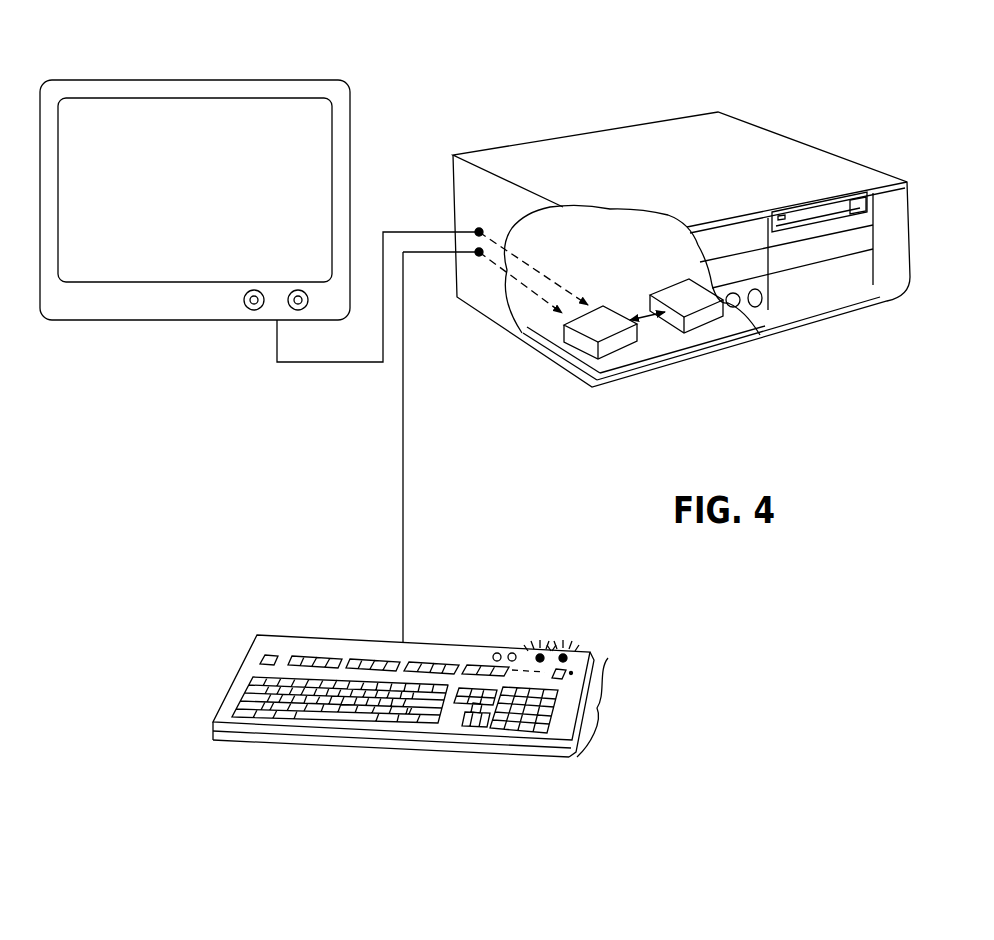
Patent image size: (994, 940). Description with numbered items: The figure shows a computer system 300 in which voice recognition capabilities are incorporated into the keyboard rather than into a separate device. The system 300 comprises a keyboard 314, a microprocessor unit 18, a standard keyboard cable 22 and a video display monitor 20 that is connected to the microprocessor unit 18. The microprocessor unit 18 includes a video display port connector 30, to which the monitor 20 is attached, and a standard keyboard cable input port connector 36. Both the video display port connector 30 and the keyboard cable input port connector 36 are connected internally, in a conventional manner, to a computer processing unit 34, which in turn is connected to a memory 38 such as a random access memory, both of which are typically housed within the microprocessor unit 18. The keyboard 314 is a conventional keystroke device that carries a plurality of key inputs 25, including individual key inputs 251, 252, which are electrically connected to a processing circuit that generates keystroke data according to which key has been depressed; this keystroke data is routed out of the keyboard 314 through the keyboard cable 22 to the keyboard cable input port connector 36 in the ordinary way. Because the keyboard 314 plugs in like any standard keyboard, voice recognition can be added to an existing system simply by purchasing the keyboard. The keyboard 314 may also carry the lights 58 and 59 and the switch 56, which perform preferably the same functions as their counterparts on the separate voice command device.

The computer system 300 is at (459, 56).
The video display monitor 20 is at (348, 122).
The microprocessor unit 18 is at (608, 128).
The video display port connector 30 is at (479, 232).
The keyboard cable input port connector 36 is at (479, 252).
The computer processing unit 34 is at (604, 305).
The memory 38 is at (684, 280).
The standard keyboard cable 22 is at (402, 452).
The keyboard 314 is at (308, 745).
The key input 251 is at (268, 655).
The key input 252 is at (297, 656).
The key inputs 25 is at (632, 707).
The switch 56 is at (512, 652).
The light 58 is at (540, 652).
The light 59 is at (575, 650).